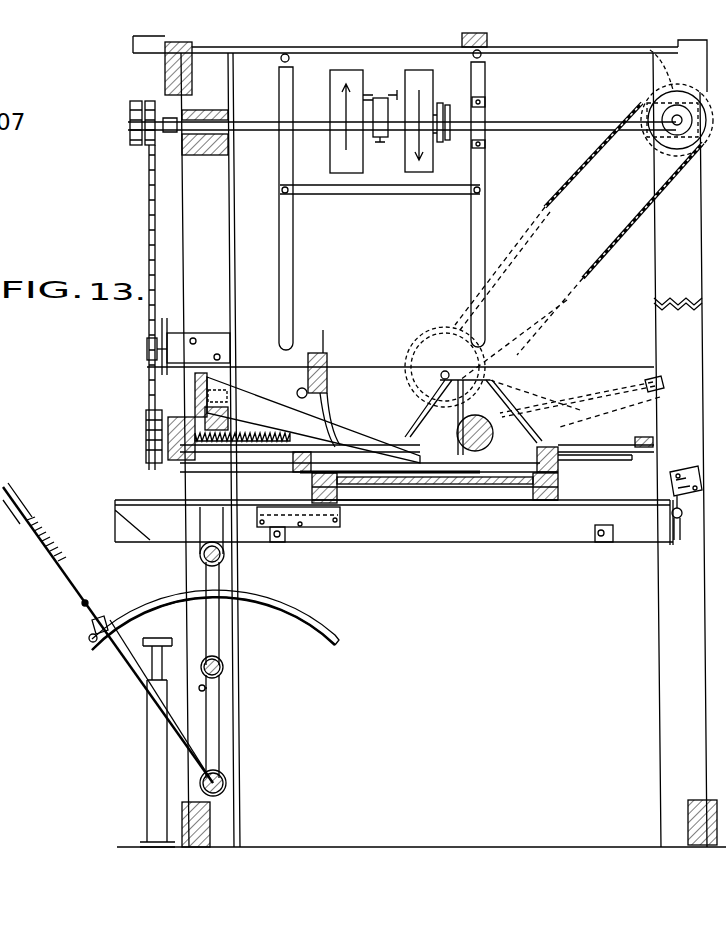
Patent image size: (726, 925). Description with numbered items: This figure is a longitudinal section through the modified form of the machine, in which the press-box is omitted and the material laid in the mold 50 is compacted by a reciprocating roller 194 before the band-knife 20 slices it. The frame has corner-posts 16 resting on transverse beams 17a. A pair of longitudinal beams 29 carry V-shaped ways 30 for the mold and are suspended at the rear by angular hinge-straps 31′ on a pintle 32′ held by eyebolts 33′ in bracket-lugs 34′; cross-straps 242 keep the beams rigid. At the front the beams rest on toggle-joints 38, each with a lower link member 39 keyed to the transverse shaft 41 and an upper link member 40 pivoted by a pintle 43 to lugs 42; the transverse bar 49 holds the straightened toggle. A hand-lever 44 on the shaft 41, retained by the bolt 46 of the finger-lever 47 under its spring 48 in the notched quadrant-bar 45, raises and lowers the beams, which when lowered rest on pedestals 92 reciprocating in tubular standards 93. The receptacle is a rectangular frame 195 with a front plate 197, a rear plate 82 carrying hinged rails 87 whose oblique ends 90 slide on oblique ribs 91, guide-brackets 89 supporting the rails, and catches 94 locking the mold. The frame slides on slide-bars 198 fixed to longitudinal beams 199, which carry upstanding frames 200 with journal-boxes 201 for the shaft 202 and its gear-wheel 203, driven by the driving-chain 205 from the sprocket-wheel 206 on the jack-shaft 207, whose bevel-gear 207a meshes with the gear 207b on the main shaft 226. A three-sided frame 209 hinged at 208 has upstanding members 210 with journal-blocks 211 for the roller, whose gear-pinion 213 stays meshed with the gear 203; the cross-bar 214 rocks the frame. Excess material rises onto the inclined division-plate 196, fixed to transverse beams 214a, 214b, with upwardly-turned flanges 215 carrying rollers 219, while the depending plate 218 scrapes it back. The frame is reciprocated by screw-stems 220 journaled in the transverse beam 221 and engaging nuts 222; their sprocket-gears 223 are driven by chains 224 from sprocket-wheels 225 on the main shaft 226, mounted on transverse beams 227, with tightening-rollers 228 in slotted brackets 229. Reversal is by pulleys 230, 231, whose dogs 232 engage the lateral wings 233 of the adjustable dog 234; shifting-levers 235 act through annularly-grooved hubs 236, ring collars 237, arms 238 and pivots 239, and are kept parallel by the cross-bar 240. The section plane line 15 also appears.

The section line 15 is at (654, 367).
The corner-posts 16 is at (235, 742).
The transverse beams 17a is at (688, 818).
The band-knife 20 is at (410, 517).
The longitudinal beams 29 is at (566, 508).
The V-shaped ways 30 is at (118, 505).
The angular hinge-straps 31′ is at (652, 547).
The pintle 32′ is at (683, 547).
The eyebolts 33′ is at (672, 512).
The bracket-lugs 34′ is at (670, 480).
The toggle-joints 38 is at (217, 652).
The lower link member 39 is at (212, 723).
The upper link member 40 is at (235, 626).
The transverse shaft 41 is at (226, 790).
The lugs 42 is at (203, 542).
The pintle 43 is at (225, 555).
The hand-lever 44 is at (120, 657).
The notched quadrant-bar 45 is at (97, 640).
The bolt 46 is at (88, 633).
The finger-lever 47 is at (20, 505).
The spring 48 is at (50, 545).
The transverse bar 49 is at (205, 688).
The mold 50 is at (362, 527).
The plate 82 is at (558, 462).
The rails 87 is at (377, 490).
The guide-brackets 89 is at (258, 527).
The oblique ends 90 is at (200, 506).
The oblique ribs 91 is at (135, 523).
The pedestals 92 is at (158, 640).
The tubular standards 93 is at (152, 762).
The catches 94 is at (310, 525).
The reciprocating roller 194 is at (488, 455).
The rectangular frame 195 is at (570, 447).
The inclined division-plate 196 is at (347, 427).
The plate 197 is at (307, 473).
The longitudinal slide-bars 198 is at (645, 455).
The longitudinal beams 199 is at (213, 452).
The upstanding frame 200 is at (437, 387).
The journal-boxes 201 is at (441, 374).
The shaft 202 is at (440, 345).
The gear-wheel 203 is at (475, 290).
The driving-chain 205 is at (593, 272).
The sprocket-wheel 206 is at (643, 150).
The jack-shaft 207 is at (677, 145).
The bevel-gear 207a is at (643, 56).
The gear 207b is at (645, 100).
The hinge 208 is at (490, 378).
The three-sided frame 209 is at (610, 443).
The upstanding member 210 is at (503, 437).
The journal-block 211 is at (490, 382).
The gear-pinion 213 is at (457, 440).
The cross-bar 214 is at (653, 441).
The transverse beam 214a is at (205, 410).
The transverse beam 214b is at (193, 380).
The upwardly-turned flanges 215 is at (252, 395).
The depending plate 218 is at (330, 380).
The casters or rollers 219 is at (300, 392).
The screw-stems 220 is at (213, 458).
The transverse beam 221 is at (168, 425).
The nuts 222 is at (325, 410).
The sprocket-gear 223 is at (148, 452).
The chain 224 is at (150, 226).
The sprocket-wheels 225 is at (140, 147).
The main shaft 226 is at (538, 121).
The transverse beams 227 is at (600, 180).
The tightening-rollers 228 is at (147, 348).
The slotted brackets 229 is at (208, 338).
The pulley 230 is at (333, 194).
The pulley 231 is at (426, 172).
The dog 232 is at (400, 143).
The lateral wings 233 is at (388, 98).
The adjustable dog 234 is at (373, 118).
The shifting-levers 235 is at (373, 132).
The annularly-grooved hubs 236 is at (447, 106).
The ring collars 237 is at (330, 142).
The arm 238 is at (475, 130).
The pivot 239 is at (485, 123).
The cross-bar 240 is at (367, 195).
The cross-straps 242 is at (606, 547).